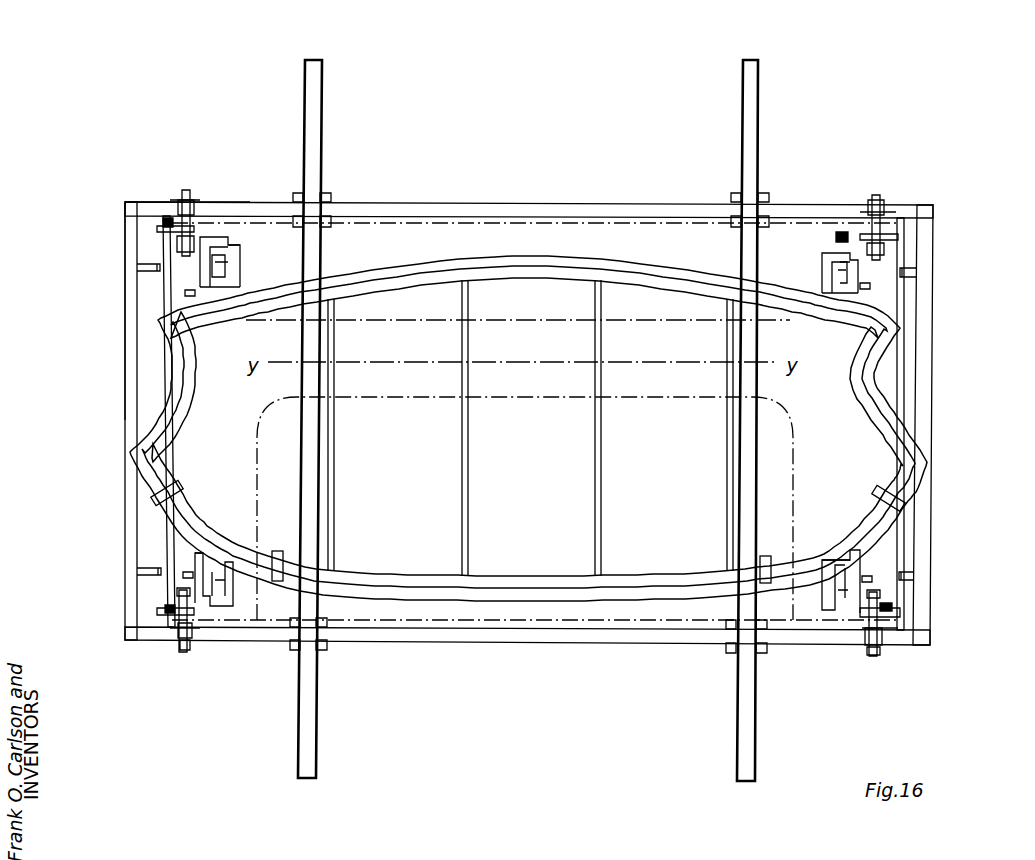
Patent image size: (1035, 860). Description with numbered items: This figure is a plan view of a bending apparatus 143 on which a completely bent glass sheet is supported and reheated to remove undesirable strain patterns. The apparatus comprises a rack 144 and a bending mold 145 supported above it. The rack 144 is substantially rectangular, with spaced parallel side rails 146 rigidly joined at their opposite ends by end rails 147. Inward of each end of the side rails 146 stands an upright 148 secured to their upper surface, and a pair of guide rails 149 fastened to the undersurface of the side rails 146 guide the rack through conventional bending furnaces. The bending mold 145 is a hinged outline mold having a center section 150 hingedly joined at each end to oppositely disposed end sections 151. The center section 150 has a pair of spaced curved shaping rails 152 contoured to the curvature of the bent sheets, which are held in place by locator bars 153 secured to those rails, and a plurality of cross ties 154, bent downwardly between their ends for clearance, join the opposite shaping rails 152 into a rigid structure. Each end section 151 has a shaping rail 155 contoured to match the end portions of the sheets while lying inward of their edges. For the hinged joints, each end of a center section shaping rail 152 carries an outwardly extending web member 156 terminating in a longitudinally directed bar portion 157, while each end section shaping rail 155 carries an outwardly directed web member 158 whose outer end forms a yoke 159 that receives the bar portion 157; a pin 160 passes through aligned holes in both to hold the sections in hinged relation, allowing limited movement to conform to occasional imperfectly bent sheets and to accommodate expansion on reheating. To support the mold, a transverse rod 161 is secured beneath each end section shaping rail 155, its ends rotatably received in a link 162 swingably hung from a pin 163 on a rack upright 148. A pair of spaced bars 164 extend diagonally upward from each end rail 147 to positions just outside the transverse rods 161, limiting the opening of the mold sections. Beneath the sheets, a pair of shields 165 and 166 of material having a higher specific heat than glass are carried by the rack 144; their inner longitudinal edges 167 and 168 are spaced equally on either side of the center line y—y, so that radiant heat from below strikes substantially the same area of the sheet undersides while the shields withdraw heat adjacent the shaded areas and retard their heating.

The bending apparatus 143 is at (135, 168).
The rack 144 is at (136, 229).
The bending mold 145 is at (126, 355).
The side rails 146 is at (276, 208).
The end rails 147 is at (137, 310).
The upright 148 is at (191, 198).
The guide rails 149 is at (318, 134).
The center section 150 is at (518, 586).
The end sections 151 is at (142, 437).
The shaping rails 152 is at (528, 263).
The locator bars 153 is at (160, 497).
The cross ties 154 is at (595, 460).
The shaping rail 155 is at (180, 395).
The web member 156 is at (233, 580).
The bar portion 157 is at (226, 606).
The web member 158 is at (193, 575).
The yoke 159 is at (206, 607).
The pin 160 is at (220, 607).
The transverse rod 161 is at (168, 248).
The link 162 is at (170, 222).
The pin 163 is at (186, 200).
The bars 164 is at (140, 268).
The shield 165 is at (621, 430).
The shield 166 is at (487, 302).
The inner longitudinal edge 167 is at (660, 398).
The inner longitudinal edge 168 is at (383, 322).